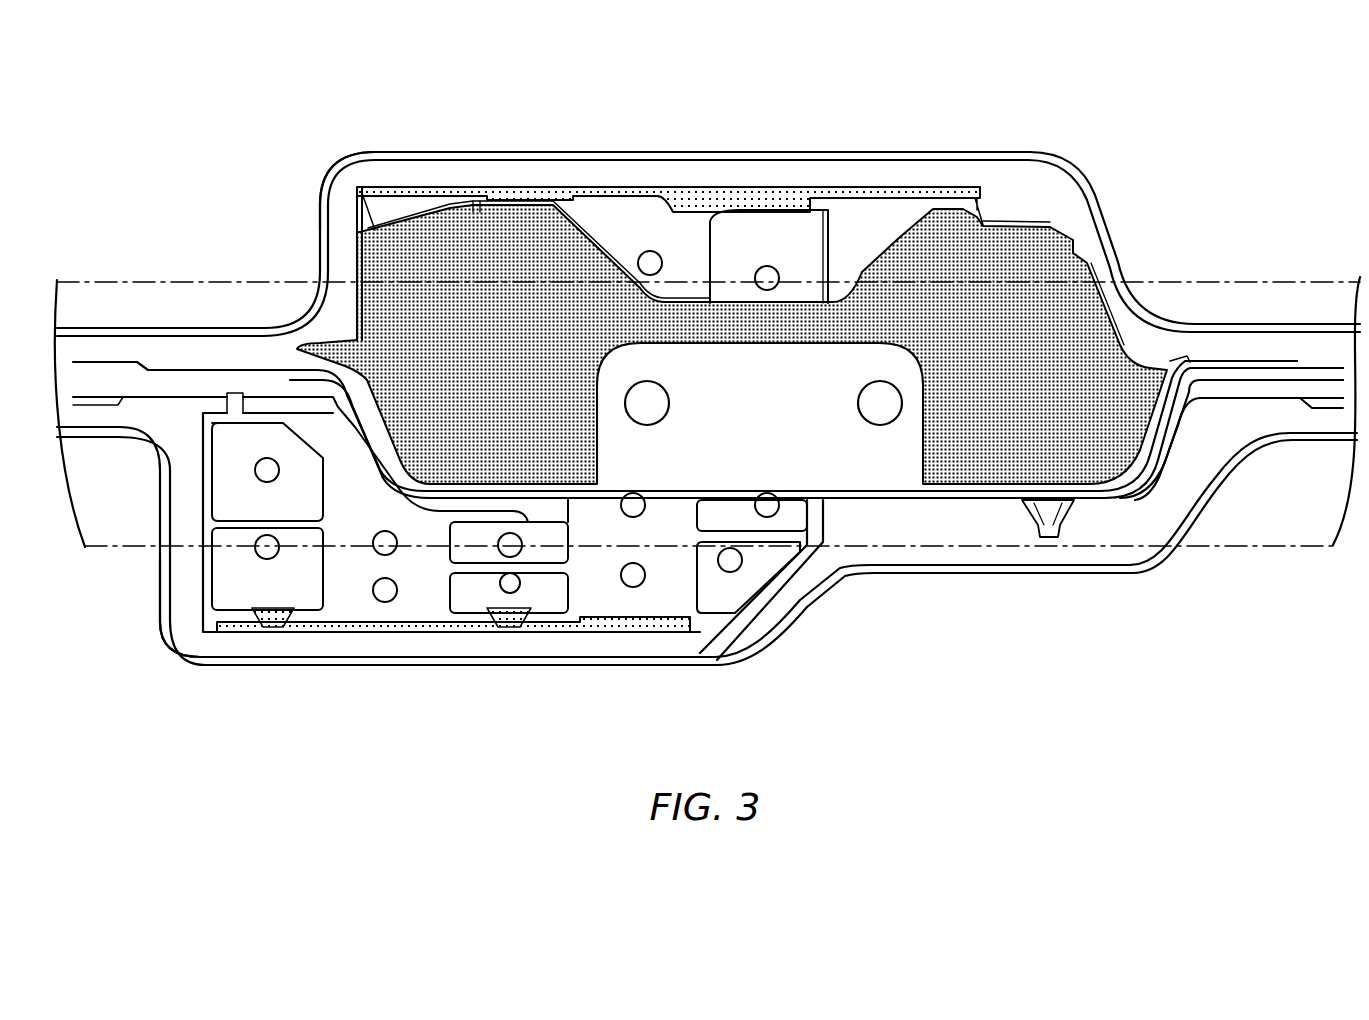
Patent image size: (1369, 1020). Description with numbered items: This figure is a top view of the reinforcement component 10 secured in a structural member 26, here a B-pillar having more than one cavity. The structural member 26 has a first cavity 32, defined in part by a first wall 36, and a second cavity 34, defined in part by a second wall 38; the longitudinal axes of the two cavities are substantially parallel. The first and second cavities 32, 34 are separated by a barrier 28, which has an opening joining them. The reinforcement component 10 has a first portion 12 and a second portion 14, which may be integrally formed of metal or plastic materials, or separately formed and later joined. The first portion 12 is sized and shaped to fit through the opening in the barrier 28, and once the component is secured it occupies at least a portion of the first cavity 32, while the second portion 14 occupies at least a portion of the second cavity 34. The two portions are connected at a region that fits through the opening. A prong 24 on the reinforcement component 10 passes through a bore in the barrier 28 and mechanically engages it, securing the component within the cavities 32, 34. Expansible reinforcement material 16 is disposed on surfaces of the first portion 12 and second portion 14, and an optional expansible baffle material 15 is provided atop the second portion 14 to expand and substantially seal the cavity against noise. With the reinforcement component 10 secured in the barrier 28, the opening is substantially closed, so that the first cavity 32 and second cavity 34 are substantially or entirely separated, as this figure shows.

The reinforcement component 10 is at (345, 300).
The first portion 12 is at (352, 598).
The second portion 14 is at (637, 228).
The expansible baffle material 15 is at (1085, 325).
The expansible reinforcement material 16 is at (523, 188).
The prong 24 is at (1050, 537).
The structural member 26 is at (1074, 150).
The barrier 28 is at (1243, 395).
The first cavity 32 is at (240, 650).
The second cavity 34 is at (388, 175).
The first wall 36 is at (922, 575).
The second wall 38 is at (705, 150).